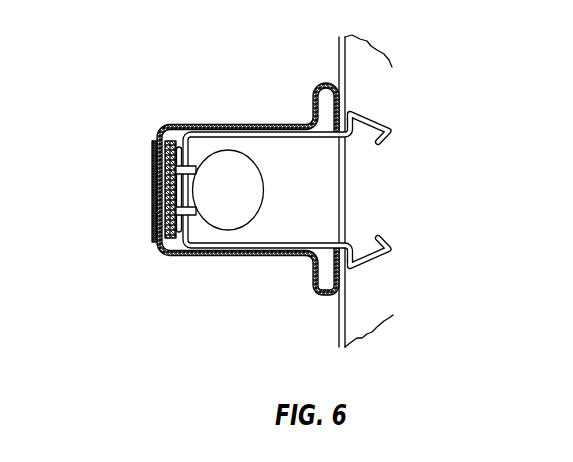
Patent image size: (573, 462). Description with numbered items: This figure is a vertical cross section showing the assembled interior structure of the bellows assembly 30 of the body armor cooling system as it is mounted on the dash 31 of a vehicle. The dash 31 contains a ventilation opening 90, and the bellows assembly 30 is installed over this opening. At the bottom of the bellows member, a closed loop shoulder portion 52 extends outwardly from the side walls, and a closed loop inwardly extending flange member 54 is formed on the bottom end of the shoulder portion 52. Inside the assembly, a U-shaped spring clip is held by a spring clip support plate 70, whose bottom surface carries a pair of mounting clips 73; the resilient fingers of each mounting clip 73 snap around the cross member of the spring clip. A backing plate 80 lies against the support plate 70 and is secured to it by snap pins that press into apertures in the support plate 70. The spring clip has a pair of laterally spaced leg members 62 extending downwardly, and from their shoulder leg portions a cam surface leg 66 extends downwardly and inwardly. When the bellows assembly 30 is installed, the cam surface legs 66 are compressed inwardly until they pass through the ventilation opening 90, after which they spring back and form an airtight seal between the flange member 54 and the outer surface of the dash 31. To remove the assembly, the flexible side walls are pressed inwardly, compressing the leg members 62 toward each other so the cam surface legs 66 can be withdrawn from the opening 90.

The bellows assembly 30 is at (247, 188).
The dash 31 is at (339, 333).
The closed loop shoulder portion 52 is at (328, 84).
The inwardly extending flange member 54 is at (320, 108).
The leg members 62 is at (268, 139).
The cam surface leg 66 is at (372, 117).
The spring clip support plate 70 is at (168, 240).
The mounting clip 73 is at (197, 171).
The backing plate 80 is at (148, 195).
The ventilation opening 90 is at (338, 221).